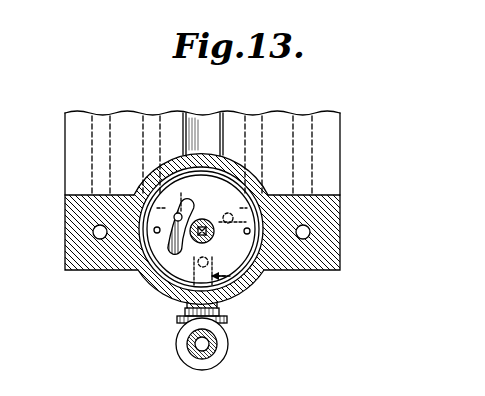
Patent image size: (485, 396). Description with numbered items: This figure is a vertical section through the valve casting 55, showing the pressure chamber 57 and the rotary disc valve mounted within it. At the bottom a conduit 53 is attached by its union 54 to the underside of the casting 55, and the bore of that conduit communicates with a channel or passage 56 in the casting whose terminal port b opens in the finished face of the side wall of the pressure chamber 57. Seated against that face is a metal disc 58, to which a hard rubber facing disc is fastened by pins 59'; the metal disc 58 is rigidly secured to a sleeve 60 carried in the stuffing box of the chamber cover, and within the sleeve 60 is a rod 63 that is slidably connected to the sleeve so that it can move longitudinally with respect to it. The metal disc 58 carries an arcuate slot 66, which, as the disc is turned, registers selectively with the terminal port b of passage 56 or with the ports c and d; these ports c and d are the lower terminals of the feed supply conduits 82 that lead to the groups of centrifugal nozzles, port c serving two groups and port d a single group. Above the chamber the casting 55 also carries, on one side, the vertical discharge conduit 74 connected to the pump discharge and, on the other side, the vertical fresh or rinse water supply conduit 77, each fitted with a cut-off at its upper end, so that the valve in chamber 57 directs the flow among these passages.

The conduit 53 is at (209, 345).
The union 54 is at (219, 311).
The casting 55 is at (330, 228).
The channel or passage 56 is at (250, 283).
The pressure chamber 57 is at (147, 242).
The metal disc 58 is at (213, 192).
The pins 59' is at (221, 266).
The sleeve 60 is at (201, 229).
The rod 63 is at (214, 234).
The arcuate slot 66 is at (173, 247).
The vertical discharge conduit 74 is at (303, 229).
The vertical fresh or rinse water supply conduit 77 is at (90, 156).
The feed supply conduits 82 is at (162, 128).
The terminal port b is at (197, 258).
The port c is at (172, 174).
The port d is at (231, 208).